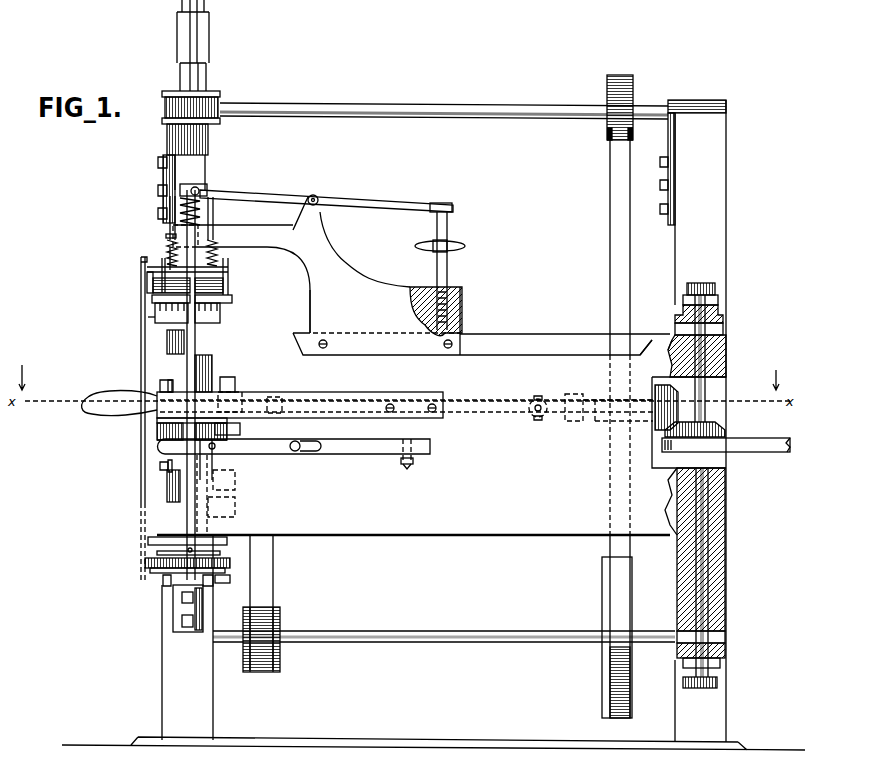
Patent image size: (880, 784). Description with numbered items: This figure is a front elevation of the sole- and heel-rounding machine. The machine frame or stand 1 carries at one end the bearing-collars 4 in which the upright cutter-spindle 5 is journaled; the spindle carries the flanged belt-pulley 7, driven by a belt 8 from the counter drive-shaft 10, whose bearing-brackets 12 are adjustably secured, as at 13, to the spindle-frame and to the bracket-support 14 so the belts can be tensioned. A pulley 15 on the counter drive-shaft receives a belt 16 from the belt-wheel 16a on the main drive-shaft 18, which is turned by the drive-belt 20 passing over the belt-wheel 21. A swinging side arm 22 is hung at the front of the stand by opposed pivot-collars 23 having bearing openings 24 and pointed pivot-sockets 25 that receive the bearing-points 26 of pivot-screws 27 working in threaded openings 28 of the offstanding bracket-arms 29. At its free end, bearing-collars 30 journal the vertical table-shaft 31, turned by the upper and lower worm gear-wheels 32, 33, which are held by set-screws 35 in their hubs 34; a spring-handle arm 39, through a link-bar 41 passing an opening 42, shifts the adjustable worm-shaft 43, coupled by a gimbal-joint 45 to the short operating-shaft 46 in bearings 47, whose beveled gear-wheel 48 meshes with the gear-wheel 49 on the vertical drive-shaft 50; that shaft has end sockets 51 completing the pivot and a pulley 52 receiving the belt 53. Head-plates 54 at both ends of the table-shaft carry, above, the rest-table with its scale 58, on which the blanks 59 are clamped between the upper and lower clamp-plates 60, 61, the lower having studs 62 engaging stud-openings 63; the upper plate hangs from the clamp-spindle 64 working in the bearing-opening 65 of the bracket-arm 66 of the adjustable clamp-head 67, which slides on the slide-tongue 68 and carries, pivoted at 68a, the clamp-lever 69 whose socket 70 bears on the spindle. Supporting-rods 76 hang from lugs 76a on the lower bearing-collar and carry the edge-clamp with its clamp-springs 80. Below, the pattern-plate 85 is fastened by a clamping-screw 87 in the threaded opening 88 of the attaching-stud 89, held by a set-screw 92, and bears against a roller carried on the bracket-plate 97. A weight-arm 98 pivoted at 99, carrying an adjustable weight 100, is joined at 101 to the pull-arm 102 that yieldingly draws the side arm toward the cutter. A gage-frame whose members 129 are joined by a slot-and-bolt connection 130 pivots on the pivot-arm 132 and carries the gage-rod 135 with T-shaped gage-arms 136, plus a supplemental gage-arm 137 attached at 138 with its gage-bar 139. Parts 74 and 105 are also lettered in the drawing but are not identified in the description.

The machine frame or stand 1 is at (214, 717).
The bearing-collars 4 is at (209, 40).
The cutter-spindle 5 is at (206, 74).
The flanged belt-pulley 7 is at (162, 91).
The belt 8 is at (170, 109).
The counter drive-shaft 10 is at (376, 104).
The bearing-brackets 12 is at (668, 140).
The adjustable securing point 13 is at (158, 184).
The bracket-support 14 is at (684, 200).
The pulley 15 is at (633, 86).
The belt 16 is at (610, 173).
The belt-wheel 16a is at (603, 626).
The main drive-shaft 18 is at (422, 631).
The drive-belt 20 is at (273, 564).
The belt-wheel 21 is at (280, 612).
The swinging side arm 22 is at (413, 496).
The pivot-collars 23 is at (726, 353).
The bearing openings or perforations 24 is at (726, 374).
The pointed pivot-sockets 25 is at (723, 333).
The bearing-points 26 is at (670, 337).
The pointed pivot-screws 27 is at (702, 283).
The threaded openings 28 is at (723, 317).
The offstanding bracket-arms 29 is at (718, 299).
The bearing-collars 30 is at (167, 344).
The vertical table-shaft 31 is at (195, 368).
The upper worm gear-wheel 32 is at (157, 416).
The lower worm gear-wheel 33 is at (157, 438).
The projected collars or hubs 34 is at (172, 384).
The set-screws 35 is at (160, 388).
The spring-handle arm 39 is at (362, 394).
The link-bar 41 is at (437, 266).
The opening 42 is at (465, 246).
The adjustable worm-shaft 43 is at (462, 296).
The gimbal-joint 45 is at (545, 425).
The short operating-shaft 46 is at (590, 421).
The bearings 47 is at (587, 400).
The beveled gear-wheel 48 is at (660, 425).
The beveled gear-wheel 49 is at (725, 428).
The vertical drive-shaft 50 is at (708, 567).
The sockets 51 is at (670, 348).
The belt wheel or pulley 52 is at (725, 453).
The belt 53 is at (784, 452).
The head-plates 54 is at (155, 318).
The scale 58 is at (220, 313).
The sole or heel blanks 59 is at (157, 272).
The upper clamp-plate 60 is at (228, 285).
The lower clamp-plate 61 is at (231, 292).
The studs 62 is at (232, 299).
The stud-openings 63 is at (152, 297).
The clamp-spindle 64 is at (195, 186).
The bearing-opening 65 is at (198, 237).
The bracket-arm 66 is at (242, 279).
The adjustable clamp-head 67 is at (376, 308).
The slide-tongue 68 is at (510, 339).
The pivotal connection 68a is at (315, 195).
The adjustable clamp-lever 69 is at (378, 199).
The socket 70 is at (207, 190).
The spring 74 is at (200, 214).
The parallel supporting-rods 76 is at (213, 222).
The lugs 76a is at (158, 209).
The clamp-springs 80 is at (168, 250).
The pattern-plate 85 is at (150, 572).
The clamping-screw 87 is at (187, 578).
The threaded opening 88 is at (166, 238).
The attaching-stud 89 is at (157, 553).
The set-screw 92 is at (192, 551).
The bracket-plate 97 is at (167, 588).
The weight-arm 98 is at (207, 476).
The pivot 99 is at (235, 514).
The adjustable weight 100 is at (242, 392).
The pivotal connection 101 is at (235, 484).
The pull-arm 102 is at (288, 396).
The plate 105 is at (145, 564).
The separate members 129 is at (362, 459).
The slot-and-bolt connection 130 is at (297, 456).
The pivot-arm 132 is at (409, 471).
The self-adjusting upright gage-rod 135 is at (195, 342).
The T-shaped gage-arms 136 is at (147, 284).
The supplemental gage-arm 137 is at (192, 437).
The adjustable connection 138 is at (240, 429).
The gage-bar 139 is at (155, 320).